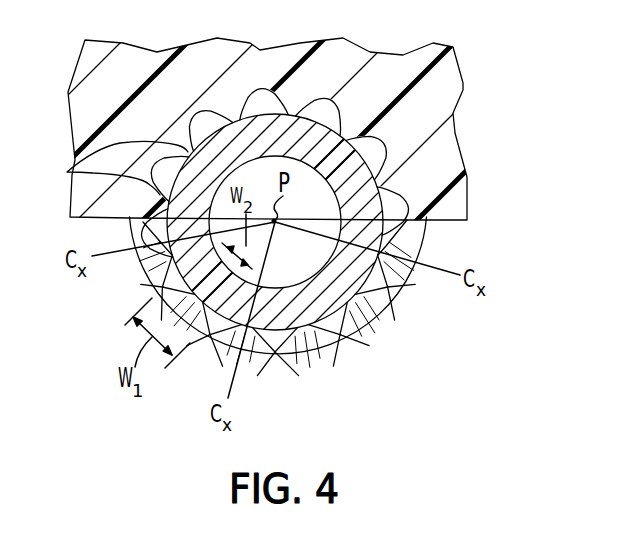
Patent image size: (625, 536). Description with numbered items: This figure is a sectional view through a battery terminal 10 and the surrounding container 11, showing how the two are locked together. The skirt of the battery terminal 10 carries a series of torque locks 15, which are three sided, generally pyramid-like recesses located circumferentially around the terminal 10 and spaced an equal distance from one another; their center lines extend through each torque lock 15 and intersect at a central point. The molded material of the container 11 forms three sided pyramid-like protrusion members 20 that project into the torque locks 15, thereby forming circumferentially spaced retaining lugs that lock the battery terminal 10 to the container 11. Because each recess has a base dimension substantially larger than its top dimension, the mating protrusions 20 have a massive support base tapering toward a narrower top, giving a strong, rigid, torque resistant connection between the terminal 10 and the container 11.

The battery terminal 10 is at (312, 268).
The container 11 is at (450, 47).
The torque locks 15 is at (380, 327).
The protrusion members 20 is at (67, 173).